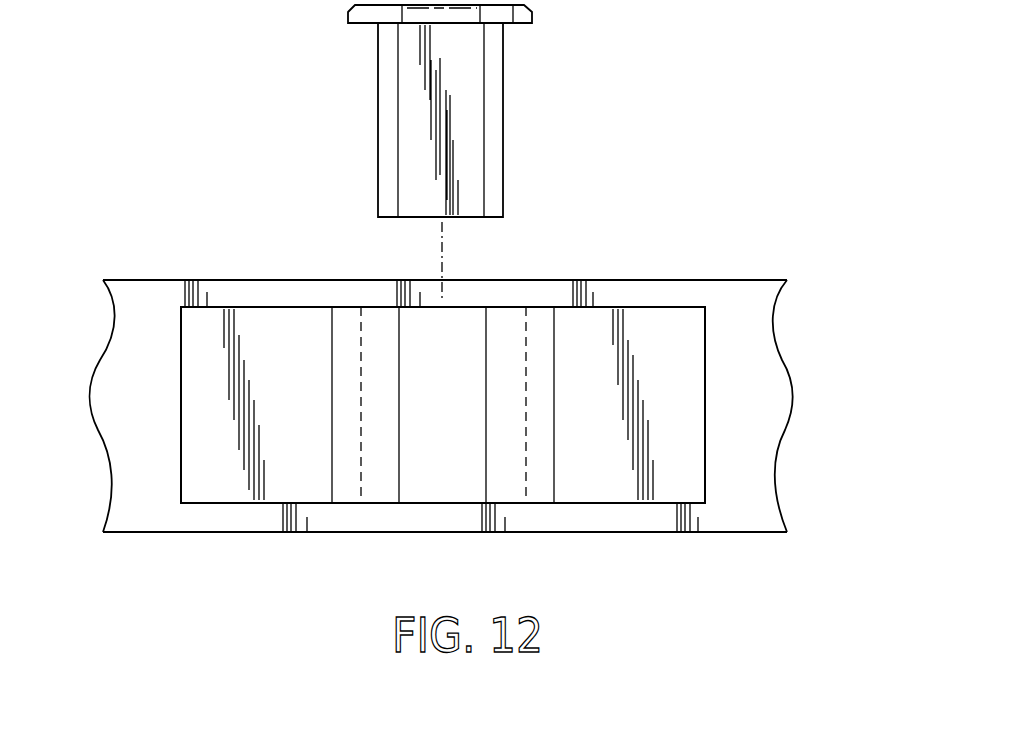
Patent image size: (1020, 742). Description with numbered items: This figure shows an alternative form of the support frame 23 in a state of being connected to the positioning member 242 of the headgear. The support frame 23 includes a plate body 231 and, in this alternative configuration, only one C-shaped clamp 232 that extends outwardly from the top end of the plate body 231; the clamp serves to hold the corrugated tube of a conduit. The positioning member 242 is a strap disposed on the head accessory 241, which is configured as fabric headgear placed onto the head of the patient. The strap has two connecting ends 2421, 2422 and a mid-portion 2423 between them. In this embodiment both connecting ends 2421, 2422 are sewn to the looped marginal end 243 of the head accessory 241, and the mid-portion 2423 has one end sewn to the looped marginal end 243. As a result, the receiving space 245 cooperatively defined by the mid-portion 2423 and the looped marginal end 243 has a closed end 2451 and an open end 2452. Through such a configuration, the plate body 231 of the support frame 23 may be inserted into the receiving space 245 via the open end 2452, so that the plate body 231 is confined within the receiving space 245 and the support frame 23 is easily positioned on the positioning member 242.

The support frame 23 is at (484, 110).
The plate body 231 is at (498, 152).
The C-shaped clamp 232 is at (495, 14).
The head accessory 241 is at (145, 302).
The positioning member 242 is at (520, 411).
The looped marginal end 243 is at (730, 302).
The receiving space 245 is at (425, 393).
The connecting end 2421 is at (648, 332).
The connecting end 2422 is at (262, 333).
The mid-portion 2423 is at (457, 462).
The closed end 2451 is at (399, 504).
The open end 2452 is at (485, 303).